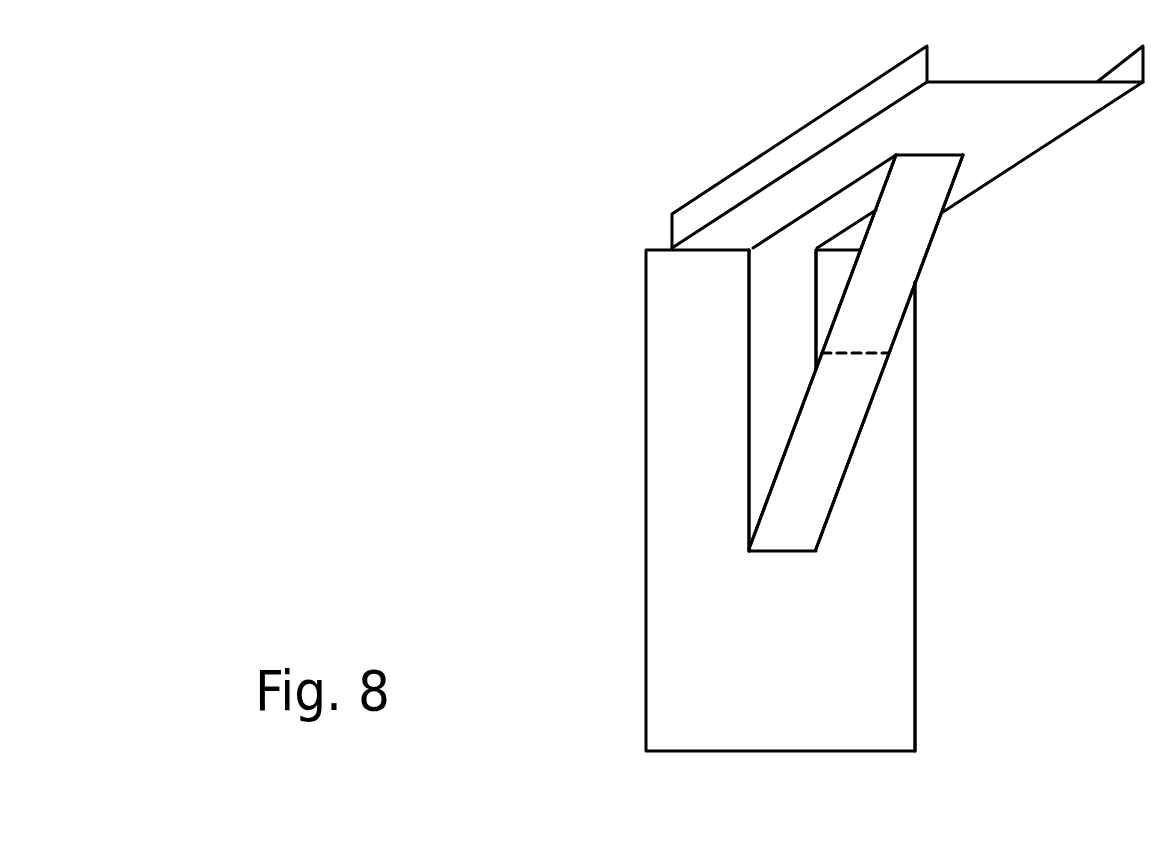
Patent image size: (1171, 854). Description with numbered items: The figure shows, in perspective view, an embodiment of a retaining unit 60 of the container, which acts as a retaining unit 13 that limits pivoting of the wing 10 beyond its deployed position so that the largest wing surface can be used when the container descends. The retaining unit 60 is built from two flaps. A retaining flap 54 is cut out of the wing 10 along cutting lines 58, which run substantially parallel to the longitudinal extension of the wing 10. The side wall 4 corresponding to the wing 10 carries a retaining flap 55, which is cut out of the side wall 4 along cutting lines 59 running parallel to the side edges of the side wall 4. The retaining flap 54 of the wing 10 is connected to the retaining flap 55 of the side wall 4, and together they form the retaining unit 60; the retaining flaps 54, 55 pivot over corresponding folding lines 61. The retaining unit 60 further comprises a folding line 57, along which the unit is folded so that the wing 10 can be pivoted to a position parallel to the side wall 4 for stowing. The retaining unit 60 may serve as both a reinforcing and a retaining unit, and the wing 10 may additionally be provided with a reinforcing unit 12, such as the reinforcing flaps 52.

The side wall 4 is at (682, 365).
The wing 10 is at (980, 127).
The reinforcing unit 12 is at (932, 275).
The retaining unit 13 is at (882, 395).
The reinforcing flap 52 is at (690, 188).
The retaining flap 54 is at (883, 292).
The retaining flap 55 is at (808, 422).
The folding line 57 is at (852, 358).
The cutting lines 58 is at (853, 227).
The cutting lines 59 is at (815, 316).
The retaining unit 60 is at (862, 488).
The folding lines 61 is at (790, 555).